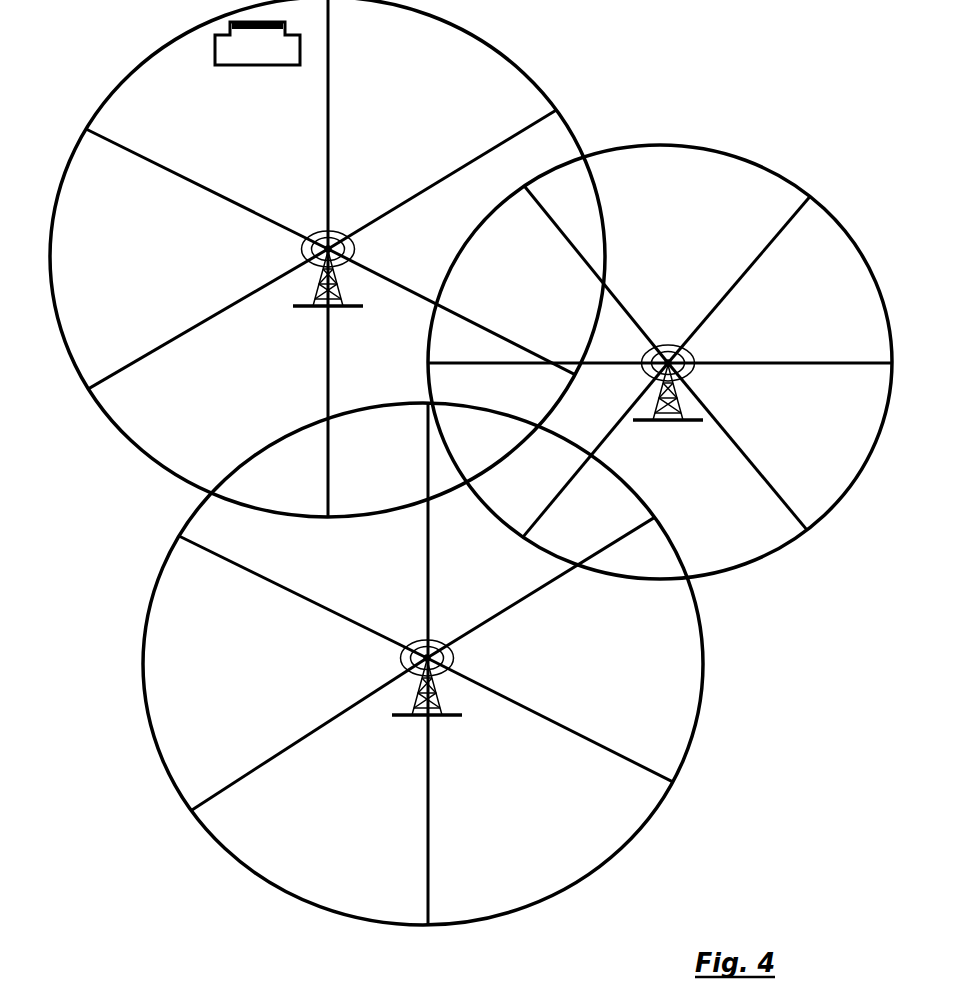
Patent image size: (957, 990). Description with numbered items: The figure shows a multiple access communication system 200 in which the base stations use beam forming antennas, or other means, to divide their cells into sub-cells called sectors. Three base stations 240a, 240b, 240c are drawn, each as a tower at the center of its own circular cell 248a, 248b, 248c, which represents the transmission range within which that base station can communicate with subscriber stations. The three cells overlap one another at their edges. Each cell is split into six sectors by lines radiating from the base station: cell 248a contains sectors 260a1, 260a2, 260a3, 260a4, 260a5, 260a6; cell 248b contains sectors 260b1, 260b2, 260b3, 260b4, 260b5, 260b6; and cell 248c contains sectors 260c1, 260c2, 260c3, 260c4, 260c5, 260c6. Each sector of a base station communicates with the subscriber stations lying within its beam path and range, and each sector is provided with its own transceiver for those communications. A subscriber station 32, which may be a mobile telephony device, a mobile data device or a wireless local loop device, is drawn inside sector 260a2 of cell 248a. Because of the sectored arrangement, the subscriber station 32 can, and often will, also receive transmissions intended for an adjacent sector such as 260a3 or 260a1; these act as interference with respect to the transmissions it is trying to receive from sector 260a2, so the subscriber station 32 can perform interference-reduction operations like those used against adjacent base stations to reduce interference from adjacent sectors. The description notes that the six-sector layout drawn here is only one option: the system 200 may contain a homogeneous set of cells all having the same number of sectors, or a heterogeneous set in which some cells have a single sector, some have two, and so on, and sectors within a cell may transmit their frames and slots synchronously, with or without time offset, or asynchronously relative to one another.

The multiple access communication system 200 is at (690, 62).
The subscriber station 32 is at (257, 43).
The base station 240a is at (337, 284).
The base station 240b is at (677, 396).
The base station 240c is at (436, 691).
The cell 248a is at (323, 258).
The cell 248b is at (660, 362).
The cell 248c is at (423, 667).
The sector 260a1 is at (208, 313).
The sector 260a2 is at (207, 168).
The sector 260a3 is at (393, 124).
The sector 260a4 is at (442, 181).
The sector 260a5 is at (451, 315).
The sector 260a6 is at (278, 383).
The sector 260b1 is at (780, 403).
The sector 260b2 is at (737, 446).
The sector 260b3 is at (595, 450).
The sector 260b4 is at (548, 331).
The sector 260b5 is at (606, 274).
The sector 260b6 is at (747, 280).
The sector 260c1 is at (295, 734).
The sector 260c2 is at (303, 597).
The sector 260c3 is at (465, 530).
The sector 260c4 is at (541, 594).
The sector 260c5 is at (550, 745).
The sector 260c6 is at (366, 791).